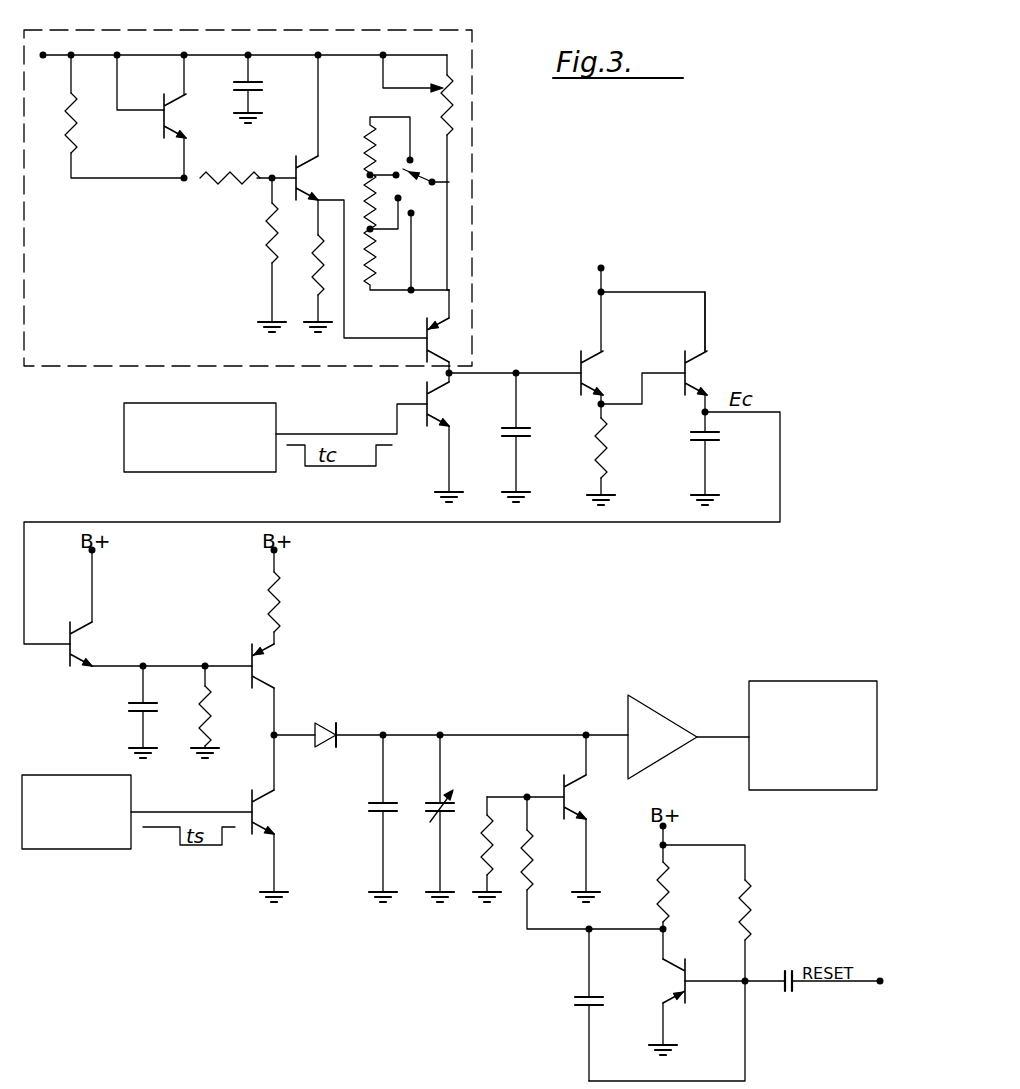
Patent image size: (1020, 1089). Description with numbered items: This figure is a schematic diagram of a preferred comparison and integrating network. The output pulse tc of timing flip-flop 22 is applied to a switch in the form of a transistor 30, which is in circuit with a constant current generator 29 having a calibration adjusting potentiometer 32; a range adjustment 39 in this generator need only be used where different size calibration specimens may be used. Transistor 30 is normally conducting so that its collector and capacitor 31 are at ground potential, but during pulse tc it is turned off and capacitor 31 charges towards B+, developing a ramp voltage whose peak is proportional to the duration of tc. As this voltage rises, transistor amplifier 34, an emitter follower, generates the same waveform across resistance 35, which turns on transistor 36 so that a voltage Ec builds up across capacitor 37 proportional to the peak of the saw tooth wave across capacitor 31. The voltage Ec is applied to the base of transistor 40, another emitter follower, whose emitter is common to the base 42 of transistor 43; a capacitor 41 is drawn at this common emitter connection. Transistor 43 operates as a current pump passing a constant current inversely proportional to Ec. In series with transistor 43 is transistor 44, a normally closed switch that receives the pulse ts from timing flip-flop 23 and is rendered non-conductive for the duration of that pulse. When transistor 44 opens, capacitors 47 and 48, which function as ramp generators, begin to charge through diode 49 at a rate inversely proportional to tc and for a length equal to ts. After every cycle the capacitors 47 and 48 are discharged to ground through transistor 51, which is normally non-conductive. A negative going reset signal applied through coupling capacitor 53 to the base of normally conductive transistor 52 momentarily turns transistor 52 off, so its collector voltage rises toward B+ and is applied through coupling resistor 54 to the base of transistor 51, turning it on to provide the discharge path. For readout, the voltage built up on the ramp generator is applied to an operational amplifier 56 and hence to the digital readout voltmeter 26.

The timing flip-flop 22 is at (124, 410).
The timing flip-flop 23 is at (98, 850).
The digital readout voltmeter 26 is at (845, 791).
The constant current generator 29 is at (474, 216).
The transistor 30 is at (438, 403).
The capacitor 31 is at (541, 427).
The calibration adjusting potentiometer 32 is at (453, 90).
The transistor amplifier 34 is at (594, 373).
The resistance 35 is at (606, 456).
The transistor 36 is at (700, 372).
The capacitor 37 is at (718, 436).
The range adjustment 39 is at (436, 199).
The transistor 40 is at (77, 646).
The capacitor 41 is at (128, 705).
The base 42 is at (250, 658).
The transistor 43 is at (264, 674).
The transistor 44 is at (264, 812).
The capacitor 47 is at (372, 807).
The capacitor 48 is at (431, 807).
The diode 49 is at (325, 721).
The transistor 51 is at (590, 782).
The transistor 52 is at (676, 982).
The coupling capacitor 53 is at (580, 1008).
The coupling resistor 54 is at (532, 870).
The operational amplifier 56 is at (676, 724).